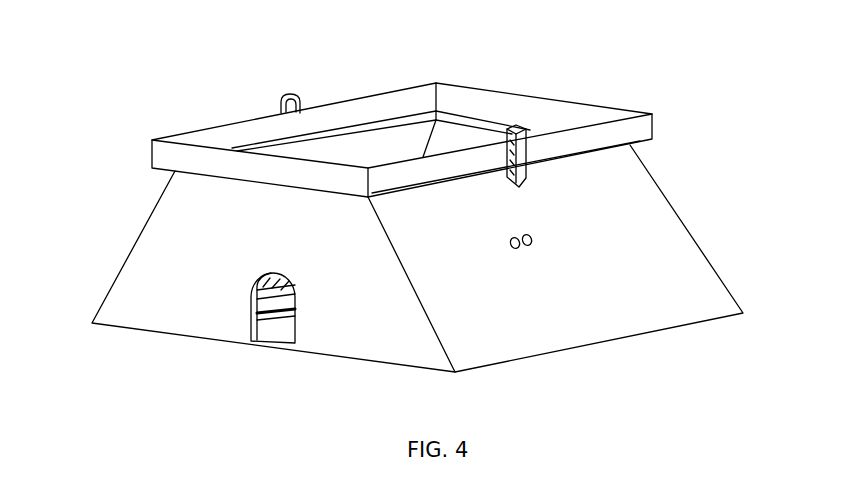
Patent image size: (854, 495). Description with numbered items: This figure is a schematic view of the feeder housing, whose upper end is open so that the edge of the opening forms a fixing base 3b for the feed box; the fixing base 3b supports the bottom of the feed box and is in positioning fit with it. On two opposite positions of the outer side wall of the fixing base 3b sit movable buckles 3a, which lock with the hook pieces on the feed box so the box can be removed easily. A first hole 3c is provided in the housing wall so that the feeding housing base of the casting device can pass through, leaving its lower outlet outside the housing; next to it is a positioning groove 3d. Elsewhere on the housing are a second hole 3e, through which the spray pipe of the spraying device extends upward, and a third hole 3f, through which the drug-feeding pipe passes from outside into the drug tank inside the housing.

The buckle 3a is at (281, 100).
The fixing base 3b is at (620, 130).
The first hole 3c is at (253, 341).
The positioning groove 3d is at (255, 308).
The second hole 3e is at (515, 249).
The third hole 3f is at (537, 250).